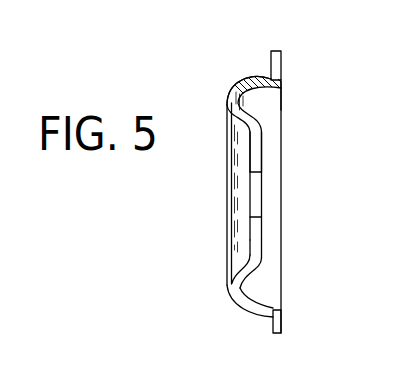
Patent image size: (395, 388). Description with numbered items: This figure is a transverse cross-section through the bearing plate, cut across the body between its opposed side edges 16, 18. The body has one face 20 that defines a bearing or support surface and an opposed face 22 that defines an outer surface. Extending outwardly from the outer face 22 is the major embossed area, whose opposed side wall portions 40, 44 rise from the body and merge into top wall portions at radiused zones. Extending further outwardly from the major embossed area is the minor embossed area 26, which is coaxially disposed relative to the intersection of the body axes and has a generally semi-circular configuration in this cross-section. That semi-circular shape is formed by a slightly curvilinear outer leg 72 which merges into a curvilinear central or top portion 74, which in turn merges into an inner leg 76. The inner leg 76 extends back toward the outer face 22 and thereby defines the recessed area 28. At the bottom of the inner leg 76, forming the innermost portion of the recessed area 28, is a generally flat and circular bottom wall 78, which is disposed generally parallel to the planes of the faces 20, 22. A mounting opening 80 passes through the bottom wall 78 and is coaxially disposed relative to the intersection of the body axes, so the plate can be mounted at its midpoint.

The side edge 16 is at (281, 333).
The side edge 18 is at (279, 51).
The face 20 is at (281, 72).
The outer face 22 is at (274, 326).
The minor embossed area 26 is at (233, 91).
The recessed area 28 is at (250, 146).
The side wall portion 40 is at (245, 313).
The side wall portion 44 is at (251, 73).
The outer leg 72 is at (232, 303).
The top portion 74 is at (234, 287).
The inner leg 76 is at (248, 254).
The bottom wall 78 is at (262, 253).
The mounting opening 80 is at (262, 217).